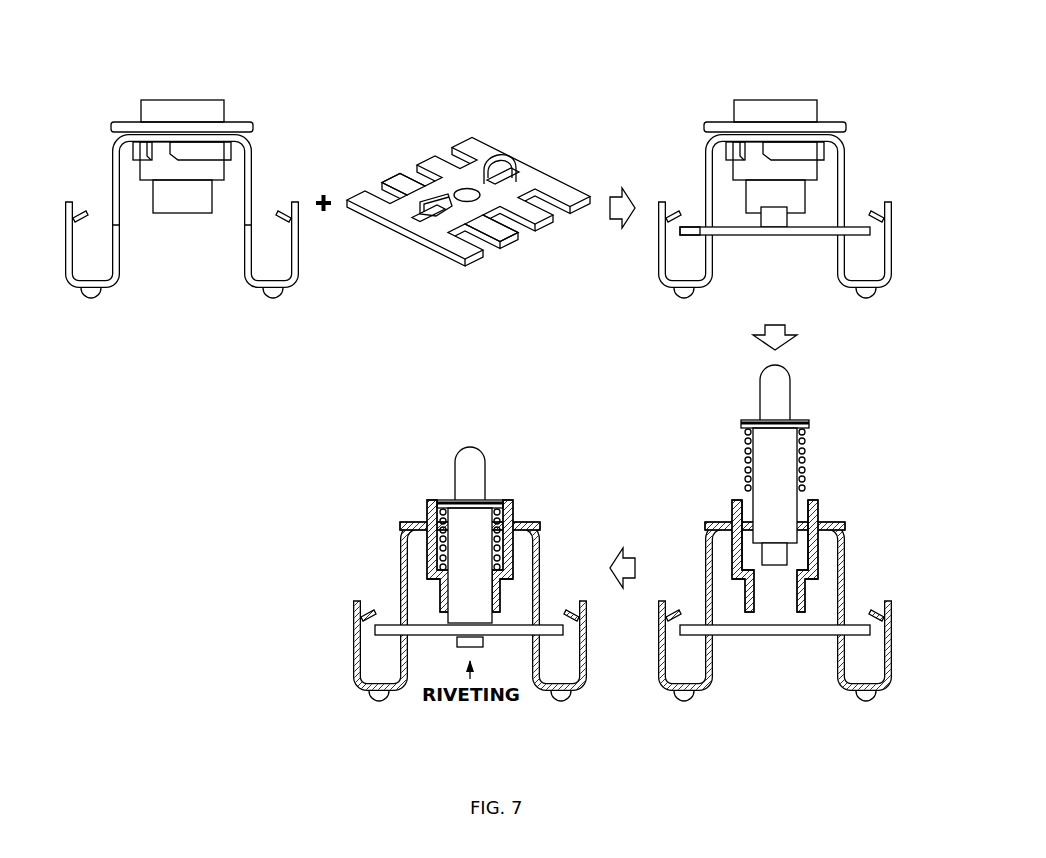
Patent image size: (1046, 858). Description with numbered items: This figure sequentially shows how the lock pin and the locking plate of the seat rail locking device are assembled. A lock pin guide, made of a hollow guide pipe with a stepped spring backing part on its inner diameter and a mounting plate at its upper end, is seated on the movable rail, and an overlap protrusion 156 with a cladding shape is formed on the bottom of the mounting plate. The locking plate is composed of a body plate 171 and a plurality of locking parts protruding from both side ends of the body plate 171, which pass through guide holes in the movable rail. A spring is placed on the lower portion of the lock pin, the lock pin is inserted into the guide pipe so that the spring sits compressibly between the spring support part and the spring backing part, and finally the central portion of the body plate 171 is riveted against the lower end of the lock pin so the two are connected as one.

The overlap protrusion 156 is at (195, 150).
The body plate 171 is at (458, 176).